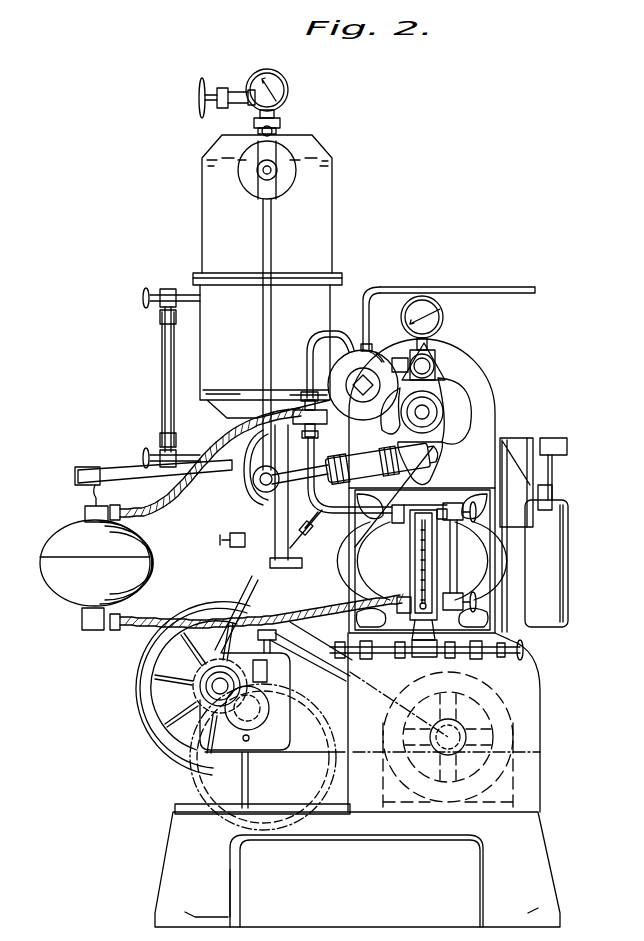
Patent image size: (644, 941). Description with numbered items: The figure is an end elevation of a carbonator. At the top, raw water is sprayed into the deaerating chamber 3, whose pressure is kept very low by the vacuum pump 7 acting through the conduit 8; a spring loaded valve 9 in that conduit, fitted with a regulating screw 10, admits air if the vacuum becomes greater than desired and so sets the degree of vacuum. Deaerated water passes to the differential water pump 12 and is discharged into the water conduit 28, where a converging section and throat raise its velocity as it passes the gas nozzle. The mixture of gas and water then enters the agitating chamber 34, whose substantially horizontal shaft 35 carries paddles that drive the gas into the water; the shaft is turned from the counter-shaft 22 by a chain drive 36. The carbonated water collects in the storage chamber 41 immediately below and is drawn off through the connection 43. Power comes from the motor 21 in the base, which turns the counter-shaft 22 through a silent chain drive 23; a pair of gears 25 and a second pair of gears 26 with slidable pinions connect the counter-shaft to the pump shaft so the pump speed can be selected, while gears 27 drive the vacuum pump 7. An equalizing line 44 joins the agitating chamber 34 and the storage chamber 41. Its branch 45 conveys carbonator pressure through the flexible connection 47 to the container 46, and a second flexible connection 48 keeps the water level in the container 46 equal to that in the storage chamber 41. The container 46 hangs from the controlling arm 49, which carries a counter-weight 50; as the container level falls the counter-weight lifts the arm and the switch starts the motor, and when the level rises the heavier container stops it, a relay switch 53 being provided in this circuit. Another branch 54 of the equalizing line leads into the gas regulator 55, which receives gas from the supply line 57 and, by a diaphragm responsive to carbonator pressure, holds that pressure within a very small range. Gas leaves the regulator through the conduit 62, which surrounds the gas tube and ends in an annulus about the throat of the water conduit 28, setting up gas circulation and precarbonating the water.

The deaerating chamber 3 is at (202, 227).
The vacuum pump 7 is at (272, 719).
The conduit 8 is at (272, 238).
The spring loaded valve 9 is at (298, 168).
The regulating screw 10 is at (272, 174).
The water pump 12 is at (258, 528).
The motor 21 is at (541, 757).
The counter-shaft 22 is at (165, 716).
The silent chain drive 23 is at (188, 726).
The pair of gears 25 is at (200, 683).
The second pair of gears 26 is at (240, 820).
The gears 27 is at (192, 752).
The water conduit 28 is at (260, 489).
The agitating chamber 34 is at (493, 406).
The shaft 35 is at (443, 402).
The chain drive 36 is at (341, 557).
The storage chamber 41 is at (429, 579).
The connection 43 is at (425, 640).
The equalizing line 44 is at (316, 340).
The branch 45 is at (298, 408).
The container 46 is at (63, 536).
The flexible connection 47 is at (172, 508).
The flexible connection 48 is at (160, 608).
The controlling arm 49 is at (112, 477).
The counter-weight 50 is at (555, 561).
The relay switch 53 is at (514, 452).
The branch 54 is at (345, 465).
The gas regulator 55 is at (361, 340).
The gas supply line 57 is at (482, 290).
The conduit 62 is at (363, 390).